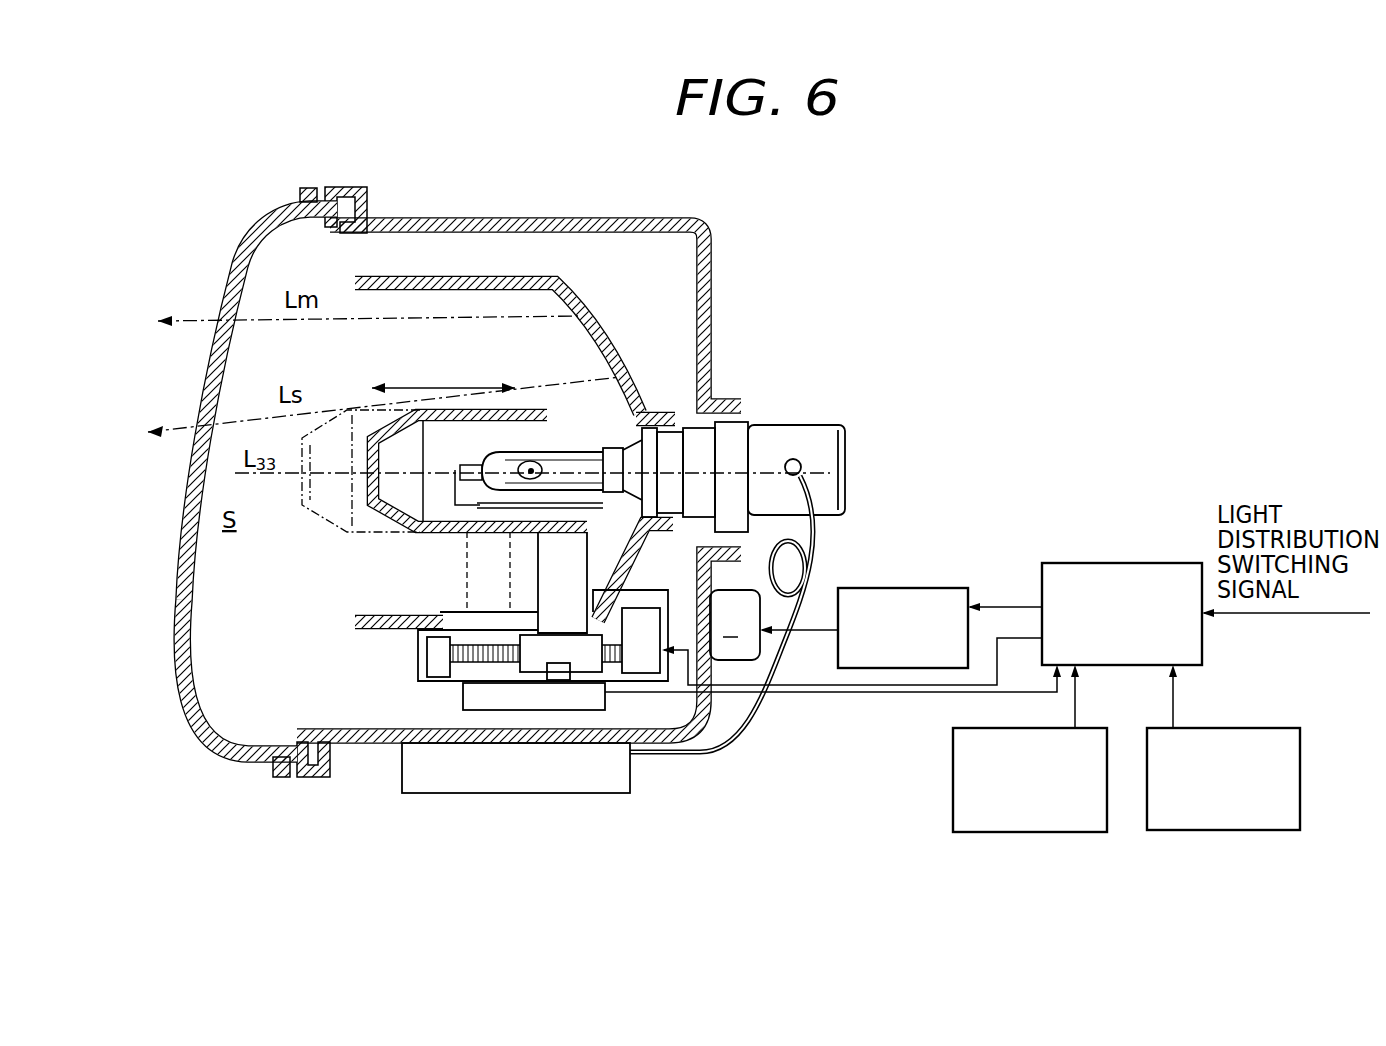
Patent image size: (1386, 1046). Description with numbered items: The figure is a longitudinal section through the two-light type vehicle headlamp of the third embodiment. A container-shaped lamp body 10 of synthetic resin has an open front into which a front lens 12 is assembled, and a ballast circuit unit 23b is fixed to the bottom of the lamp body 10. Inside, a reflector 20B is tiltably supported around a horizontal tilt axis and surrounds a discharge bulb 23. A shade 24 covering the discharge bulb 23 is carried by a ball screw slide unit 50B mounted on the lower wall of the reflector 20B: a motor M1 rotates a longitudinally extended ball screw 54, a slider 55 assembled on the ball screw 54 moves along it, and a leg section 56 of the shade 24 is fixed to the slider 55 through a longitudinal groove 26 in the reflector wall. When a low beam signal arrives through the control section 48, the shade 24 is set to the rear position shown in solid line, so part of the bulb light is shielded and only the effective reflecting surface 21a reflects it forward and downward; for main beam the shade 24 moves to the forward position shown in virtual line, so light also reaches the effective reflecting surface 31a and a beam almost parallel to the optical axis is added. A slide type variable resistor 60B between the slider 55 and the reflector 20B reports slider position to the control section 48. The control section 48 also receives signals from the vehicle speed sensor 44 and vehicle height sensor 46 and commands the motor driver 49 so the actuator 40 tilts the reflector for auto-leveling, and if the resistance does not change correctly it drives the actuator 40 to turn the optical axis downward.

The lamp body 10 is at (497, 218).
The front lens 12 is at (232, 265).
The reflector 20B is at (613, 328).
The effective reflecting surface 21a is at (557, 460).
The discharge bulb 23 is at (618, 425).
The ballast circuit unit 23b is at (405, 778).
The shade 24 is at (373, 495).
The longitudinal groove 26 is at (437, 640).
The effective reflecting surface 31a is at (532, 462).
The actuator 40 is at (737, 660).
The vehicle speed sensor 44 is at (1300, 760).
The vehicle height sensor 46 is at (953, 772).
The control section 48 is at (1150, 563).
The motor driver 49 is at (917, 588).
The ball screw slide unit 50B is at (517, 715).
The ball screw 54 is at (485, 665).
The slider 55 is at (590, 660).
The leg section 56 is at (550, 572).
The slide type variable resistor 60B is at (563, 698).
The motor M1 is at (650, 663).